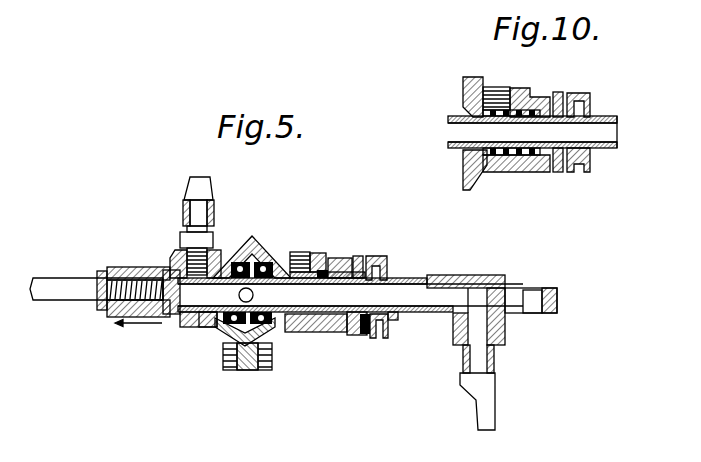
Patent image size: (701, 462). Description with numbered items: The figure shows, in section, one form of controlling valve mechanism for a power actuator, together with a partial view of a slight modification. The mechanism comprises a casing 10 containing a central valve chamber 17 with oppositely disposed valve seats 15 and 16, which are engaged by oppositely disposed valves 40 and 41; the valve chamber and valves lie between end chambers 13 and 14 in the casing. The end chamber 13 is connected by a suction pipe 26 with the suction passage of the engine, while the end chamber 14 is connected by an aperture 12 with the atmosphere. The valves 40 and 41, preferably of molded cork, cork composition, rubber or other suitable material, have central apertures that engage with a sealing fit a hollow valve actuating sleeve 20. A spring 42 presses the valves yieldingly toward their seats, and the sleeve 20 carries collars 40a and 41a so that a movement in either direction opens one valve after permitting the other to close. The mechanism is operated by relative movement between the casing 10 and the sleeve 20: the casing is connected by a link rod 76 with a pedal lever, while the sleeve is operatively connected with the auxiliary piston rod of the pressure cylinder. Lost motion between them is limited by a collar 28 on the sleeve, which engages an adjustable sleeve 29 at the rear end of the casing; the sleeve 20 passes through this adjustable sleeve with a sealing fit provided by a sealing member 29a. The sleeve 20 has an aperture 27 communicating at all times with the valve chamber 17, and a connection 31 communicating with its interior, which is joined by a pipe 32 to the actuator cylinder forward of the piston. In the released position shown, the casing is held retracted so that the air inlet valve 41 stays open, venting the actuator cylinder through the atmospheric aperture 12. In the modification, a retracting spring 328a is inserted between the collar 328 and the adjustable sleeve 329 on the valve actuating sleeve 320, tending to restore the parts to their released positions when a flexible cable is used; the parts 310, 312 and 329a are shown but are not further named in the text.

In FIG. 5, the casing 10 is at (254, 258).
In FIG. 5, the aperture 12 is at (330, 260).
In FIG. 5, the end chamber 13 is at (182, 327).
In FIG. 5, the end chamber 14 is at (327, 334).
In FIG. 5, the valve seat 15 is at (222, 252).
In FIG. 5, the valve seat 16 is at (292, 257).
In FIG. 5, the central valve chamber 17 is at (249, 249).
In FIG. 5, the valve actuating sleeve 20 is at (404, 279).
In FIG. 5, the suction pipe 26 is at (186, 193).
In FIG. 5, the aperture 27 is at (253, 295).
In FIG. 5, the collar 28 is at (358, 256).
In FIG. 5, the adjustable sleeve 29 is at (372, 338).
In FIG. 5, the sealing member 29a is at (388, 316).
In FIG. 5, the connection 31 is at (491, 363).
In FIG. 5, the pipe 32 is at (476, 408).
In FIG. 5, the valve 40 is at (220, 331).
In FIG. 5, the collar 40a is at (206, 326).
In FIG. 5, the air inlet valve 41 is at (272, 328).
In FIG. 5, the collar 41a is at (303, 332).
In FIG. 5, the spring 42 is at (246, 352).
In FIG. 5, the link rod 76 is at (55, 283).
In FIG. 10, the nut 310 is at (466, 89).
In FIG. 10, the threaded sleeve 312 is at (505, 90).
In FIG. 10, the valve actuating sleeve 320 is at (606, 118).
In FIG. 10, the collar 328 is at (478, 153).
In FIG. 10, the retracting spring 328a is at (517, 158).
In FIG. 10, the adjustable sleeve 329 is at (561, 160).
In FIG. 10, the retaining collar 329a is at (589, 156).